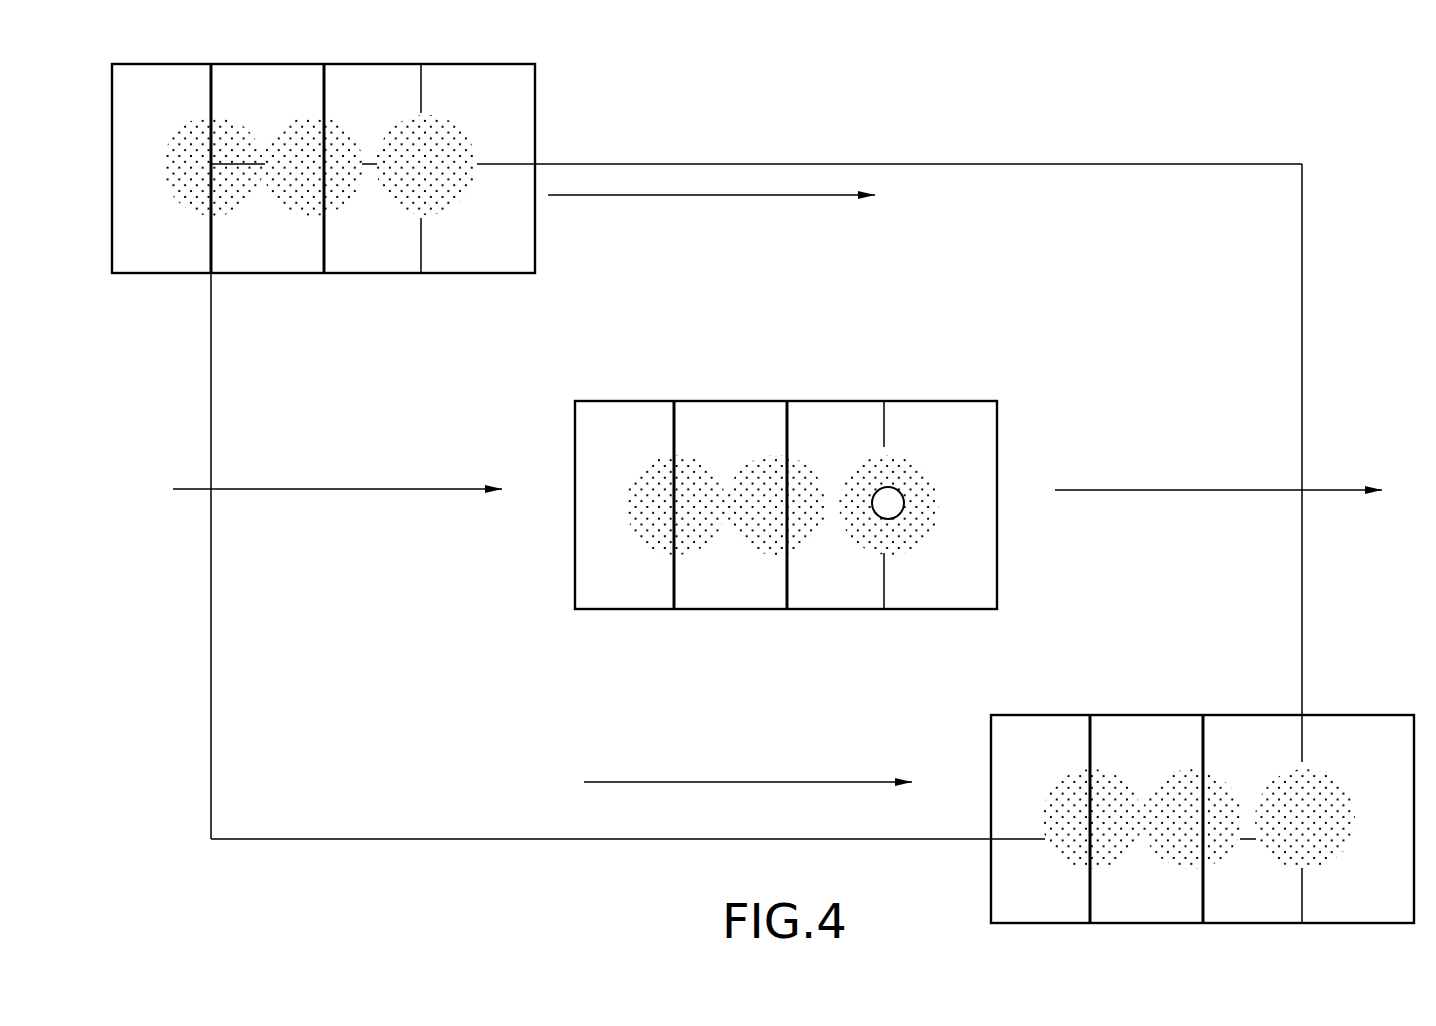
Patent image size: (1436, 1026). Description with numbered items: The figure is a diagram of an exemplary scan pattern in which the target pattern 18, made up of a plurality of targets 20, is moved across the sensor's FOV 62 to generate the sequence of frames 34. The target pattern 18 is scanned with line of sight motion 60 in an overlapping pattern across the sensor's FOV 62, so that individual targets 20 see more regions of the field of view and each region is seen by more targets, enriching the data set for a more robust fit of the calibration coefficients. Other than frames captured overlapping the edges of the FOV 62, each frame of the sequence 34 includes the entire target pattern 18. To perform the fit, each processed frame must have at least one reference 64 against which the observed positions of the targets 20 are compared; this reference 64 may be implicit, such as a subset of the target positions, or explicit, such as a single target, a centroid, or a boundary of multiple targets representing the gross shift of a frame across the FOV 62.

The target pattern 18 is at (903, 450).
The targets 20 is at (888, 467).
The sequence of frames 34 is at (1000, 445).
The line of sight motion 60 is at (363, 488).
The sensor's FOV 62 is at (1303, 240).
The reference 64 is at (880, 520).